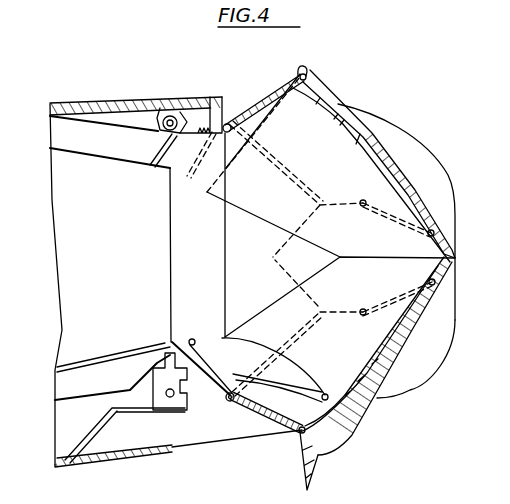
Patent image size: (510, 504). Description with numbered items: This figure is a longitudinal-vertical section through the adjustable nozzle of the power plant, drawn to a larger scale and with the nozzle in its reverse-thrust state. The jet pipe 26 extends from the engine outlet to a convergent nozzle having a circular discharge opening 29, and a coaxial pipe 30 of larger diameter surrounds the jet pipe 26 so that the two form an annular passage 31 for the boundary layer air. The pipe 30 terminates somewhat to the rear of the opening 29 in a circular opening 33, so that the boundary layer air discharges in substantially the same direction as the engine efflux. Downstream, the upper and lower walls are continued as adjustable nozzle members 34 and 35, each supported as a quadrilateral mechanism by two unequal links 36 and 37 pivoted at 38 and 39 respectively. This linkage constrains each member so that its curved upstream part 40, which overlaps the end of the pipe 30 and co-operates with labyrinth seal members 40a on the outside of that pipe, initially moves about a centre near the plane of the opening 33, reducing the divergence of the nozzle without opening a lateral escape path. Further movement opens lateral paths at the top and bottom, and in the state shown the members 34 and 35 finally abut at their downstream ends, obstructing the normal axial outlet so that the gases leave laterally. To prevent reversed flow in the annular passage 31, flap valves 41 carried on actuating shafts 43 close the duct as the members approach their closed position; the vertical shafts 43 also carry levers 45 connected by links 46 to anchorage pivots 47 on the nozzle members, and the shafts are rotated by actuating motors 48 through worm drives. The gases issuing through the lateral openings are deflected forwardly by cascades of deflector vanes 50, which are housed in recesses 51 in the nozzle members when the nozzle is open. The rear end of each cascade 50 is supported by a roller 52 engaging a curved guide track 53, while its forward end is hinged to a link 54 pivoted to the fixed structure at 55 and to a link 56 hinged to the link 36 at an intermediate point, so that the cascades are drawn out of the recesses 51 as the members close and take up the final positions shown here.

The jet pipe 26 is at (109, 160).
The circular discharge opening 29 is at (171, 259).
The coaxial pipe 30 is at (110, 142).
The annular passage 31 is at (70, 143).
The circular opening 33 is at (225, 259).
The adjustable nozzle member 34 is at (393, 162).
The adjustable nozzle member 35 is at (407, 358).
The link 36 is at (345, 180).
The link 37 is at (403, 227).
The pivot 38 is at (271, 258).
The pivot 39 is at (360, 205).
The upstream part 40 is at (292, 125).
The labyrinth seal members 40a is at (210, 100).
The flap valve 41 is at (152, 153).
The actuating shaft 43 is at (190, 400).
The lever 45 is at (203, 362).
The link 46 is at (293, 392).
The anchorage pivot 47 is at (324, 393).
The actuating motor 48 is at (135, 398).
The cascade of deflector vanes 50 is at (265, 100).
The recess 51 is at (372, 133).
The roller 52 is at (306, 74).
The curved guide track 53 is at (343, 108).
The link 54 is at (221, 124).
The pivot 55 is at (192, 339).
The link 56 is at (305, 160).